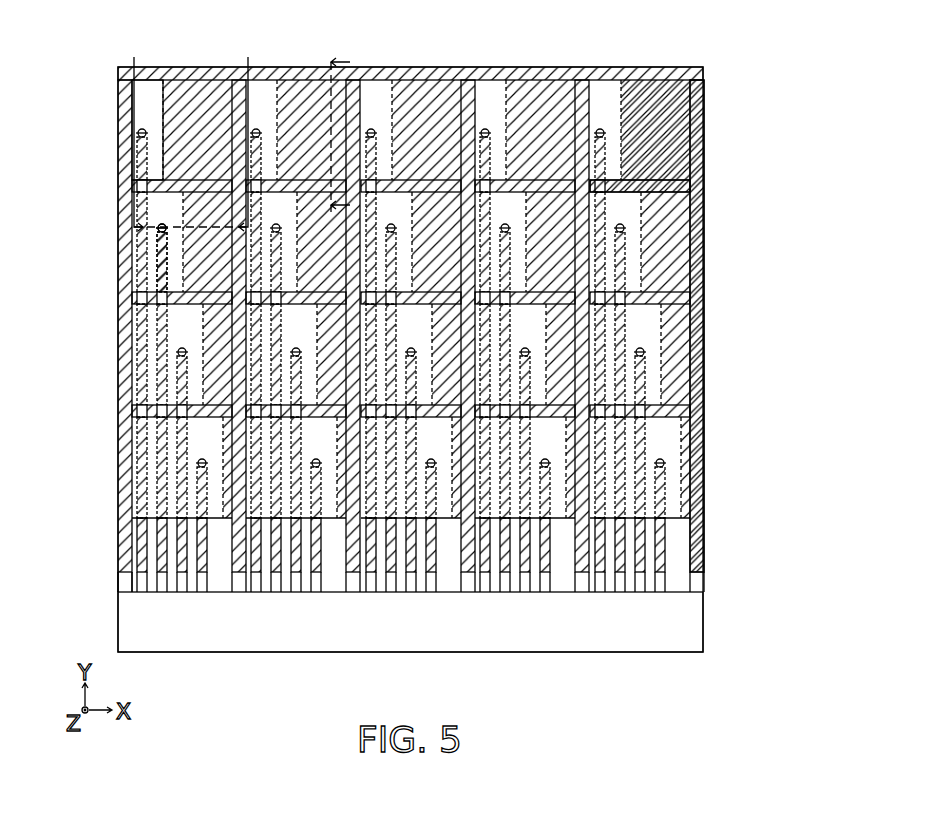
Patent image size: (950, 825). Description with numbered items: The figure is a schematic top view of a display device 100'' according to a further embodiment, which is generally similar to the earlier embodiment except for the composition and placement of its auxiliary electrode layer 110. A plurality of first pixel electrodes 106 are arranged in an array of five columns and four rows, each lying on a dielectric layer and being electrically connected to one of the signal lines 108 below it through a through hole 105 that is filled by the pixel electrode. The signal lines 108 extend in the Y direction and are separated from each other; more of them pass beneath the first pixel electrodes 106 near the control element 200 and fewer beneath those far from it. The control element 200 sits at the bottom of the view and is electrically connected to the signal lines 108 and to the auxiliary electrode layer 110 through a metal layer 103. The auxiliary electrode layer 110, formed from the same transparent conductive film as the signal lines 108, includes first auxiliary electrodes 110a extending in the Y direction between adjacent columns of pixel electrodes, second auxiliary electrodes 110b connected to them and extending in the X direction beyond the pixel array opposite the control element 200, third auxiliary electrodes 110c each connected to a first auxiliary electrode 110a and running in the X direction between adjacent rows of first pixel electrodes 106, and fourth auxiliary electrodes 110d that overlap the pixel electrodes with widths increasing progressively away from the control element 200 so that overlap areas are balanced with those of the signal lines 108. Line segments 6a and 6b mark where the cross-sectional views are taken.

The display device 100'' is at (440, 330).
The auxiliary electrode layer 110 is at (786, 62).
The first auxiliary electrodes 110a is at (696, 100).
The second auxiliary electrodes 110b is at (703, 74).
The third auxiliary electrodes 110c is at (686, 185).
The fourth auxiliary electrodes 110d is at (670, 123).
The first pixel electrodes 106 is at (150, 88).
The through hole 105 is at (157, 227).
The signal lines 108 is at (160, 280).
The metal layer 103 is at (127, 582).
The control element 200 is at (163, 622).
The line segment 6a- 6a is at (194, 133).
The line segment 6b- 6b is at (337, 133).